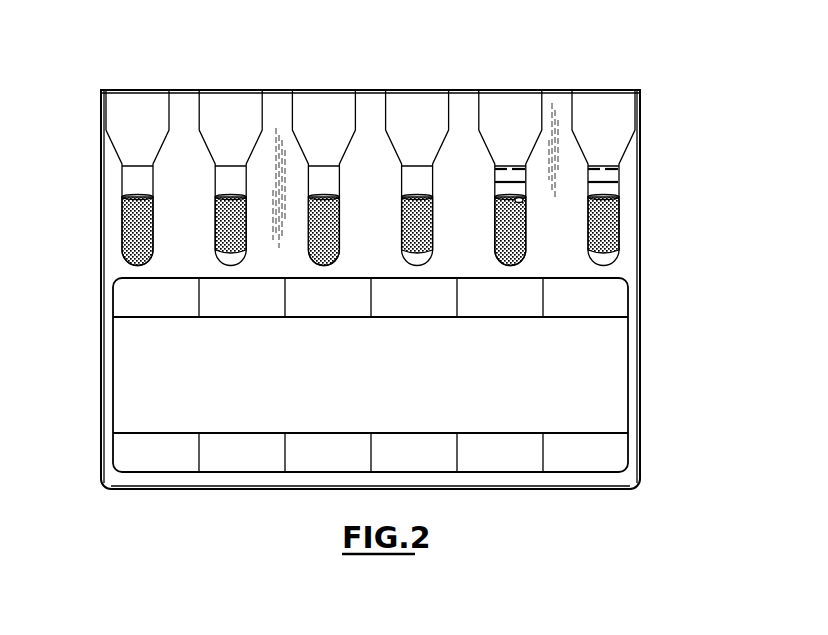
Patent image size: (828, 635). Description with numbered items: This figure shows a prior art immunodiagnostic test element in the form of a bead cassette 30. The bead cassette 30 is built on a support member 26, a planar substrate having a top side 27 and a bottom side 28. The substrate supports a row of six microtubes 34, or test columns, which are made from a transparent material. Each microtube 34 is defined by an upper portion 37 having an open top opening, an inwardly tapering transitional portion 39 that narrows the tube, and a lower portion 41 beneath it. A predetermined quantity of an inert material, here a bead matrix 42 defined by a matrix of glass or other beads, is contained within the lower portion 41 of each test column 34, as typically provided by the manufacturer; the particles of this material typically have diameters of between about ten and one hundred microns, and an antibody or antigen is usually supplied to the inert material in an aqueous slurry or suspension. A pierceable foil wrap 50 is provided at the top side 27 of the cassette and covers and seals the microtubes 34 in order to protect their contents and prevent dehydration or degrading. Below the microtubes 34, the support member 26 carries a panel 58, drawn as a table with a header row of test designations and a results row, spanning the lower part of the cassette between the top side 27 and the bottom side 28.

The bead cassette 30 is at (188, 66).
The support member 26 is at (640, 258).
The top side 27 is at (368, 90).
The bottom side 28 is at (476, 490).
The foil wrap 50 is at (113, 90).
The upper portion 37 is at (296, 112).
The microtubes 34 is at (613, 142).
The inwardly tapering transitional portion 39 is at (550, 130).
The lower portion 41 is at (128, 183).
The bead matrix 42 is at (401, 230).
The panel 58 is at (612, 385).